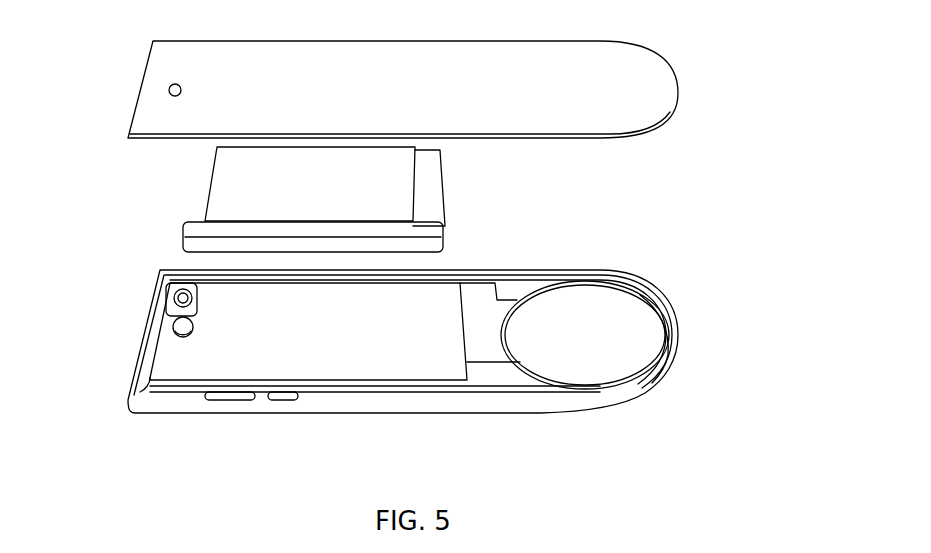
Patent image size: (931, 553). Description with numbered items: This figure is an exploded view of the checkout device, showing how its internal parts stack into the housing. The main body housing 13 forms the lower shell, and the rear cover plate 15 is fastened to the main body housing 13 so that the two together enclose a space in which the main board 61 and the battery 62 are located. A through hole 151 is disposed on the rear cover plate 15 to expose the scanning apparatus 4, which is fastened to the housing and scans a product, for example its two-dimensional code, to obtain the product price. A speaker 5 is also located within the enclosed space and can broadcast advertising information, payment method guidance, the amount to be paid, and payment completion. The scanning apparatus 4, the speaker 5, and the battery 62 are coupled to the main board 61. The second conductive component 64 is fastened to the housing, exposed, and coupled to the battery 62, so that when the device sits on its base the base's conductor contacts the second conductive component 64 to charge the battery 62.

The rear cover plate 15 is at (360, 80).
The through hole 151 is at (172, 85).
The main board 61 is at (220, 168).
The battery 62 is at (185, 232).
The main body housing 13 is at (175, 405).
The speaker 5 is at (168, 303).
The scanning apparatus 4 is at (178, 338).
The second conductive component 64 is at (660, 305).